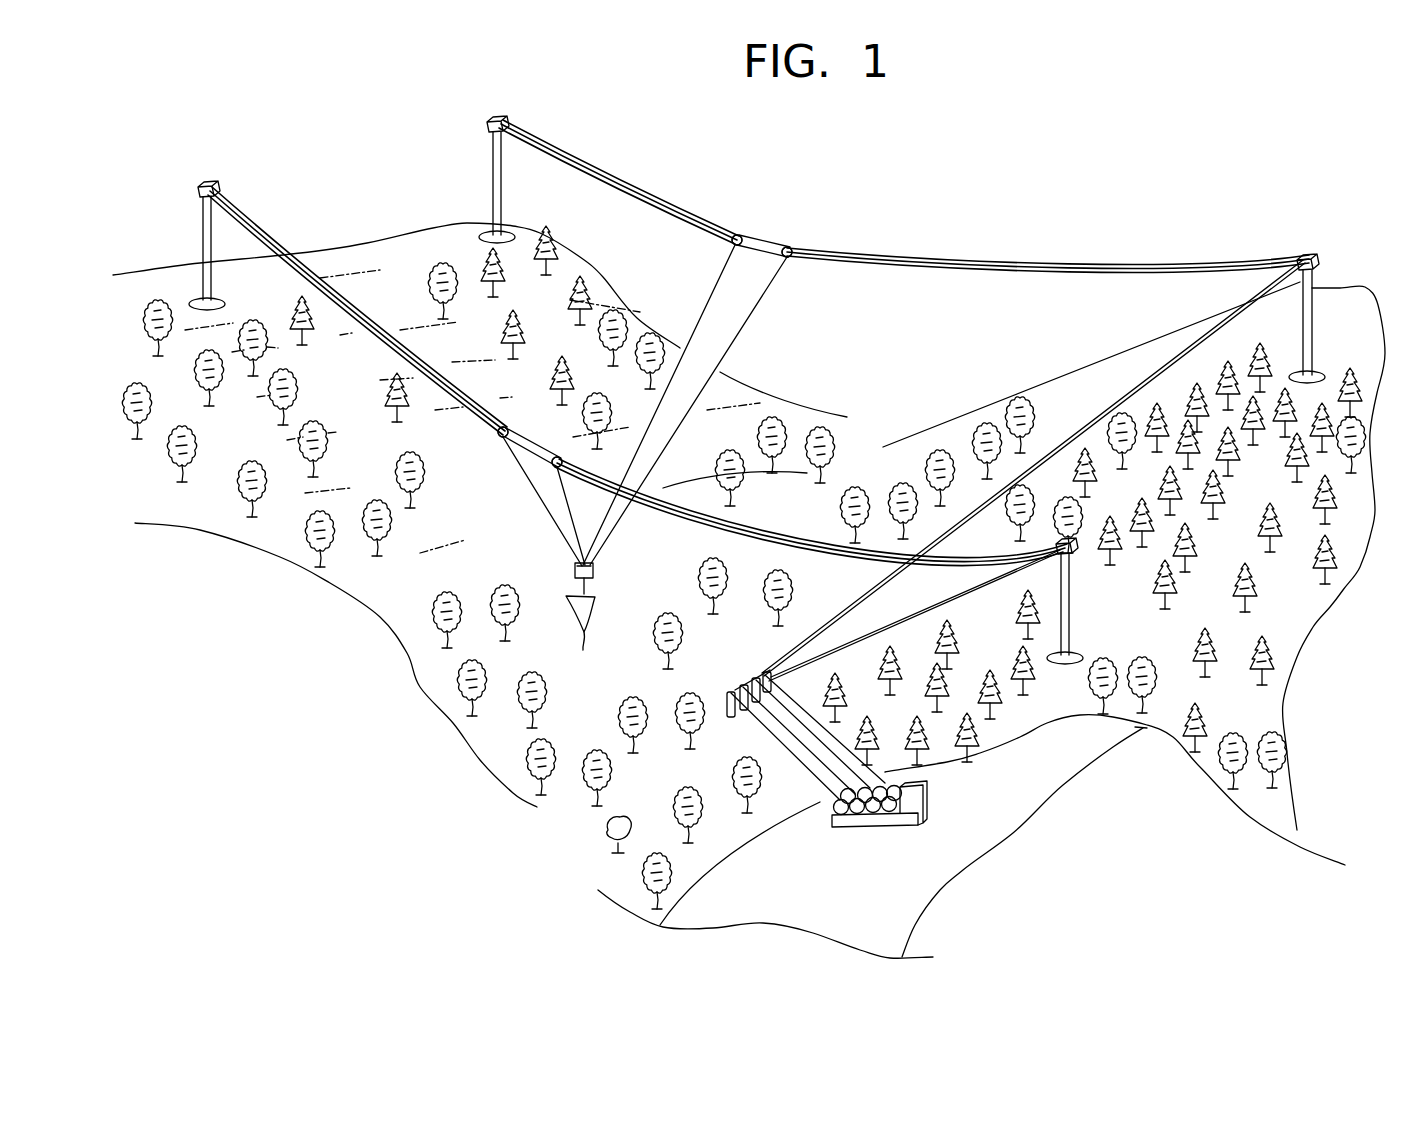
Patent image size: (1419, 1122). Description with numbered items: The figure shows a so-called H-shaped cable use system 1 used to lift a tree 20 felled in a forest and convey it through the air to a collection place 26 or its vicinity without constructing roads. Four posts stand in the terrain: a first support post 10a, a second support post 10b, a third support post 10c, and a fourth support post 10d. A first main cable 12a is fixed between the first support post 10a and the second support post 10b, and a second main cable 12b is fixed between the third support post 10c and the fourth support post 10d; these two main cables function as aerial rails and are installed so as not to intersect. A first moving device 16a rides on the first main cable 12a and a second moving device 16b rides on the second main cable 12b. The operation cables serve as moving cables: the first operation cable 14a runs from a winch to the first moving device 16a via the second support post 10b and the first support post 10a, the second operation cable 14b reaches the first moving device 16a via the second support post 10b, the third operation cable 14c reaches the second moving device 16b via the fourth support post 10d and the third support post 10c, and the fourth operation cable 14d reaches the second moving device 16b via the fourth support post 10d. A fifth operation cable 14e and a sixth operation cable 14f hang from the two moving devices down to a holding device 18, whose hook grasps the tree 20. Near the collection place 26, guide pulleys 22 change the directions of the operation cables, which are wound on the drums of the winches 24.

The cable use system 1 is at (948, 195).
The first support post 10a is at (206, 233).
The second support post 10b is at (1069, 592).
The third support post 10c is at (494, 165).
The fourth support post 10d is at (1313, 322).
The first main cable 12a is at (426, 360).
The second main cable 12b is at (766, 232).
The first operation cable 14a is at (368, 342).
The second operation cable 14b is at (692, 522).
The third operation cable 14c is at (634, 206).
The fourth operation cable 14d is at (872, 259).
The fifth operation cable 14e is at (530, 502).
The sixth operation cable 14f is at (746, 336).
The first moving device 16a is at (501, 446).
The second moving device 16b is at (768, 258).
The holding device 18 is at (574, 571).
The tree 20 is at (585, 637).
The guide pulleys 22 is at (738, 683).
The winches 24 is at (856, 828).
The collection place 26 is at (1050, 782).